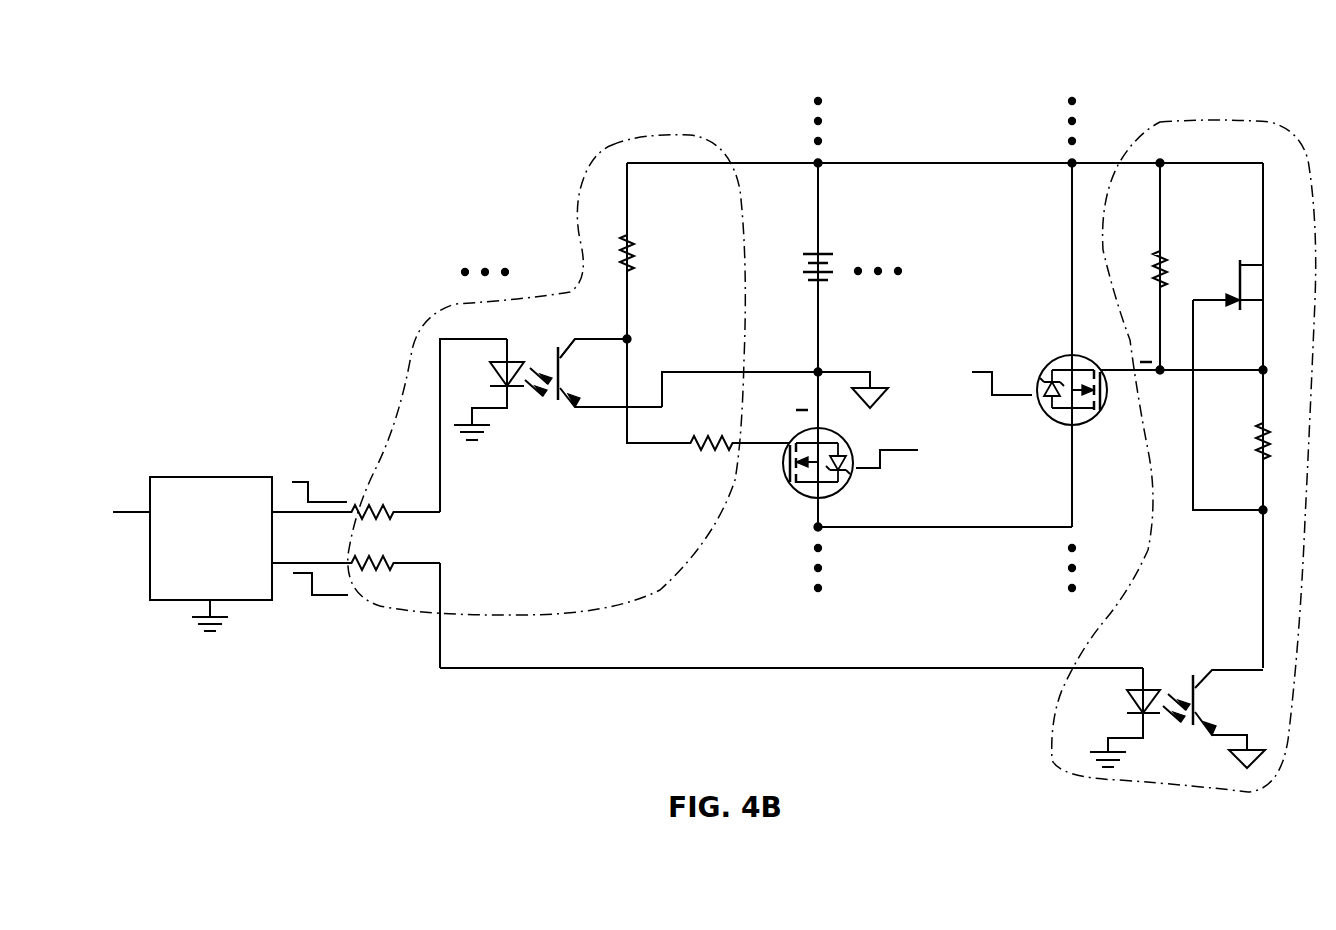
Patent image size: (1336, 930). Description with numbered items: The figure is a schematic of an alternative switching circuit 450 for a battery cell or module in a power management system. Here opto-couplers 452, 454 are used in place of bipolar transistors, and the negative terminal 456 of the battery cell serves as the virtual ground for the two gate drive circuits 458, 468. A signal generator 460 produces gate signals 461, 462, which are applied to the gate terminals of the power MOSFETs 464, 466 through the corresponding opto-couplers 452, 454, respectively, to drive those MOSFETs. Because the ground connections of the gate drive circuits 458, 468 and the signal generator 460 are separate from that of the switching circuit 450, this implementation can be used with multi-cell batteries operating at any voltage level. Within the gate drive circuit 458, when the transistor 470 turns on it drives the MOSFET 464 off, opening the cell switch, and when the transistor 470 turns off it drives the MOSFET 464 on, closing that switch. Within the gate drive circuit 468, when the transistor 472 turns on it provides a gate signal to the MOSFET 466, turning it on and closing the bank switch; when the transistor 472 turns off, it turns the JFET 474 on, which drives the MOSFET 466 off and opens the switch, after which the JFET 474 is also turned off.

The switching circuit 450 is at (296, 126).
The opto-coupler 452 is at (527, 413).
The opto-coupler 454 is at (1158, 655).
The negative terminal 456 is at (818, 315).
The gate drive circuit 458 is at (612, 146).
The signal generator 460 is at (200, 592).
The gate signal 461 is at (292, 512).
The gate signal 462 is at (283, 563).
The power MOSFET 464 is at (850, 470).
The power MOSFET 466 is at (1088, 424).
The gate drive circuit 468 is at (1208, 122).
The transistor 470 is at (628, 338).
The transistor 472 is at (1232, 666).
The JFET 474 is at (1263, 240).